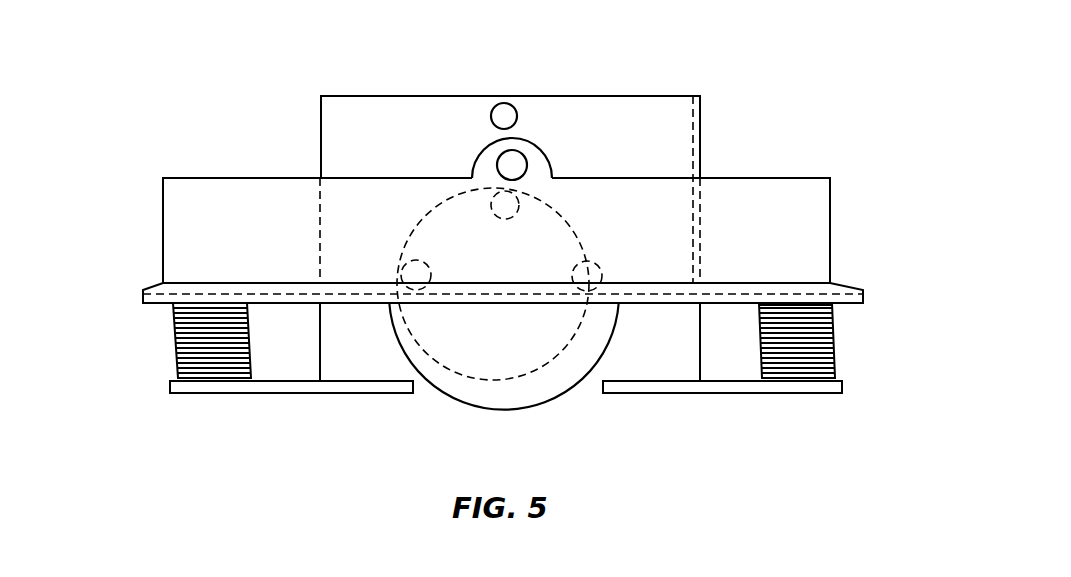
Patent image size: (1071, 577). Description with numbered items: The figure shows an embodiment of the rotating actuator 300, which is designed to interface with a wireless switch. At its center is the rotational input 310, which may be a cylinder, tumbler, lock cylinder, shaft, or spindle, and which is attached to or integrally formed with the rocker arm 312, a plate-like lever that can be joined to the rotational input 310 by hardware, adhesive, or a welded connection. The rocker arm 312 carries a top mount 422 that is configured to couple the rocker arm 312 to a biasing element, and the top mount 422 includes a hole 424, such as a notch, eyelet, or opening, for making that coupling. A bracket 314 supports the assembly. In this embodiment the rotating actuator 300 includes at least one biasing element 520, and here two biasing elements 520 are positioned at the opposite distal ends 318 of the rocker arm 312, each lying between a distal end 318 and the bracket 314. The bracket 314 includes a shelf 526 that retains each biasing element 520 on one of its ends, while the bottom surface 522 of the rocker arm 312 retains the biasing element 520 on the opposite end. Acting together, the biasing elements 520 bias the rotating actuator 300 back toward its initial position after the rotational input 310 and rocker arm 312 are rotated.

The rotating actuator 300 is at (775, 122).
The rotational input 310 is at (500, 412).
The rocker arm 312 is at (187, 253).
The bracket 314 is at (570, 118).
The distal end 318 is at (143, 292).
The top mount 422 is at (490, 165).
The hole 424 is at (508, 158).
The biasing element 520 is at (173, 337).
The bottom surface 522 is at (843, 307).
The shelf 526 is at (727, 385).